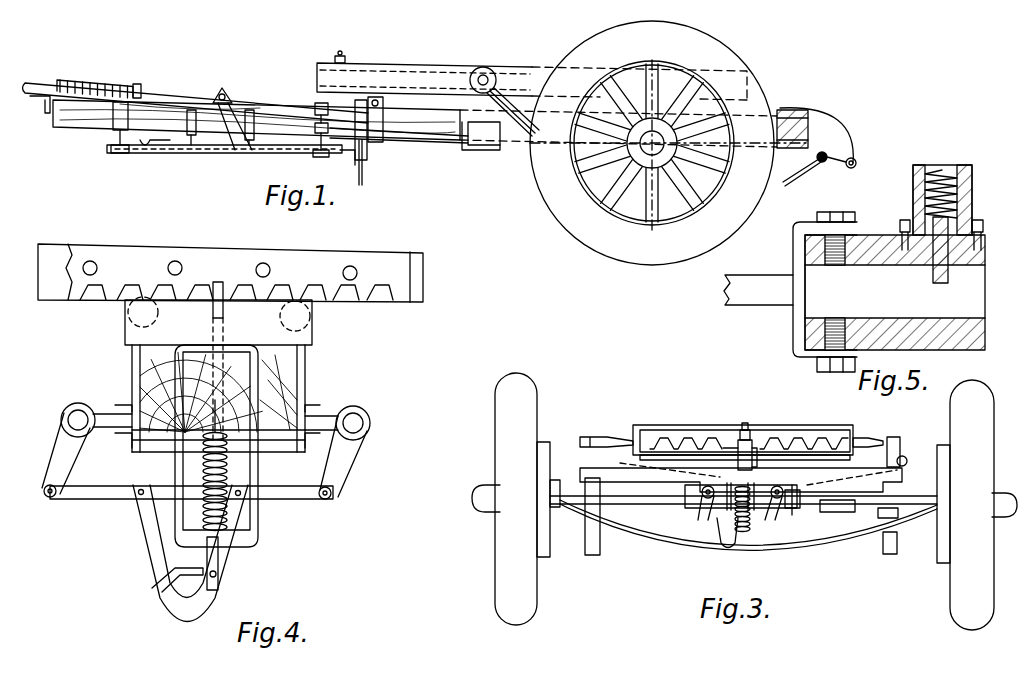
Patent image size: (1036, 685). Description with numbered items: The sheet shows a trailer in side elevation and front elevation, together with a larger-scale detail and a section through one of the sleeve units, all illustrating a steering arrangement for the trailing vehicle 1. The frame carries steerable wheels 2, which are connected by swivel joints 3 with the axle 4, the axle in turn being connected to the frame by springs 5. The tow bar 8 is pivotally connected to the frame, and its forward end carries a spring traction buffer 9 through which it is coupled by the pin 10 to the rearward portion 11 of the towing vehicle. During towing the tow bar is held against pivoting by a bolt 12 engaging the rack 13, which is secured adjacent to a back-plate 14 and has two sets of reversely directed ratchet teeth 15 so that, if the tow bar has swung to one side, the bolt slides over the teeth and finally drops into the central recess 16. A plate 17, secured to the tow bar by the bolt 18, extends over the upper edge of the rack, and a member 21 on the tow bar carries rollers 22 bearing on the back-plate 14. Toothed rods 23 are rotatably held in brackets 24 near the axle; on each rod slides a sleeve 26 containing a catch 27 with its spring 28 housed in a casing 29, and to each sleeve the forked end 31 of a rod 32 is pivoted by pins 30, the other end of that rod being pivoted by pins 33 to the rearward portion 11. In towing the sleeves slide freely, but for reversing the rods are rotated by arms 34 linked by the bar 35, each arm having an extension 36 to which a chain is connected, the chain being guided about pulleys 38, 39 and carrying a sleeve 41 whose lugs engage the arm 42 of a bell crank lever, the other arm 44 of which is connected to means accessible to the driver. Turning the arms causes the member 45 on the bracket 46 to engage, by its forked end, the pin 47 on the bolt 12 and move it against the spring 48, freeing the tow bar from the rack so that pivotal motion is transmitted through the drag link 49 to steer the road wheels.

In FIG. 1, the trailing vehicle 1 is at (355, 70).
In FIG. 3, the trailing vehicle 1 is at (582, 472).
In FIG. 1, the steerable wheels 2 is at (733, 62).
In FIG. 3, the steerable wheels 2 is at (500, 568).
In FIG. 1, the swivel joints 3 is at (792, 129).
In FIG. 3, the swivel joints 3 is at (555, 493).
In FIG. 1, the axle 4 is at (660, 140).
In FIG. 3, the axle 4 is at (843, 545).
In FIG. 1, the springs 5 is at (796, 180).
In FIG. 3, the springs 5 is at (590, 530).
In FIG. 1, the tow bar 8 is at (462, 115).
In FIG. 4, the tow bar 8 is at (130, 370).
In FIG. 1, the spring traction buffer 9 is at (95, 84).
In FIG. 1, the pin 10 is at (52, 86).
In FIG. 3, the pin 10 is at (745, 448).
In FIG. 1, the rearward portion of the towing vehicle 11 is at (45, 108).
In FIG. 3, the rearward portion of the towing vehicle 11 is at (675, 470).
In FIG. 1, the bolt 12 is at (362, 175).
In FIG. 4, the bolt 12 is at (222, 290).
In FIG. 4, the rack 13 is at (303, 262).
In FIG. 3, the rack 13 is at (785, 433).
In FIG. 4, the back-plate 14 is at (45, 275).
In FIG. 4, the ratchet teeth 15 is at (135, 283).
In FIG. 3, the ratchet teeth 15 is at (710, 440).
In FIG. 4, the recess 16 is at (213, 280).
In FIG. 3, the plate 17 is at (757, 462).
In FIG. 1, the bolt 18 is at (338, 55).
In FIG. 3, the bolt 18 is at (744, 425).
In FIG. 4, the member 21 is at (300, 338).
In FIG. 4, the rollers 22 is at (128, 312).
In FIG. 4, the toothed rods 23 is at (78, 418).
In FIG. 3, the toothed rods 23 is at (702, 496).
In FIG. 1, the brackets 24 is at (632, 75).
In FIG. 1, the sleeve 26 is at (488, 146).
In FIG. 5, the sleeve 26 is at (868, 247).
In FIG. 5, the catch 27 is at (948, 230).
In FIG. 5, the spring 28 is at (958, 180).
In FIG. 1, the casing 29 is at (495, 80).
In FIG. 5, the casing 29 is at (915, 180).
In FIG. 1, the pins 30 is at (476, 150).
In FIG. 1, the forked end 31 is at (462, 134).
In FIG. 5, the forked end 31 is at (792, 345).
In FIG. 1, the rod 32 is at (383, 128).
In FIG. 3, the rod 32 is at (600, 437).
In FIG. 3, the pins 33 is at (905, 458).
In FIG. 1, the arms 34 is at (367, 150).
In FIG. 4, the arms 34 is at (58, 445).
In FIG. 3, the arms 34 is at (700, 507).
In FIG. 4, the bar 35 is at (95, 500).
In FIG. 3, the bar 35 is at (700, 505).
In FIG. 1, the extension 36 is at (348, 158).
In FIG. 5, the extension 36 is at (834, 372).
In FIG. 4, the extension 36 is at (48, 497).
In FIG. 1, the pulley 38 is at (322, 157).
In FIG. 1, the pulley 39 is at (112, 149).
In FIG. 1, the sleeve 41 is at (185, 152).
In FIG. 1, the arm of the bell crank lever 42 is at (247, 140).
In FIG. 1, the arm of the bell crank lever 44 is at (146, 143).
In FIG. 4, the member 45 is at (175, 572).
In FIG. 1, the bracket 46 is at (362, 160).
In FIG. 4, the bracket 46 is at (150, 540).
In FIG. 3, the bracket 46 is at (730, 548).
In FIG. 4, the pin 47 is at (218, 575).
In FIG. 1, the spring 48 is at (228, 95).
In FIG. 4, the spring 48 is at (227, 520).
In FIG. 3, the drag link 49 is at (848, 514).